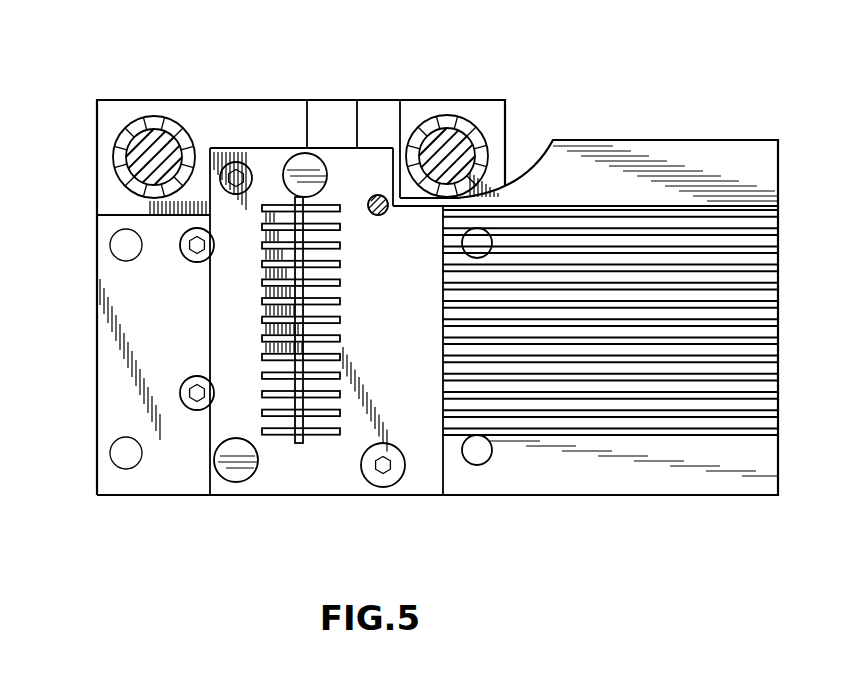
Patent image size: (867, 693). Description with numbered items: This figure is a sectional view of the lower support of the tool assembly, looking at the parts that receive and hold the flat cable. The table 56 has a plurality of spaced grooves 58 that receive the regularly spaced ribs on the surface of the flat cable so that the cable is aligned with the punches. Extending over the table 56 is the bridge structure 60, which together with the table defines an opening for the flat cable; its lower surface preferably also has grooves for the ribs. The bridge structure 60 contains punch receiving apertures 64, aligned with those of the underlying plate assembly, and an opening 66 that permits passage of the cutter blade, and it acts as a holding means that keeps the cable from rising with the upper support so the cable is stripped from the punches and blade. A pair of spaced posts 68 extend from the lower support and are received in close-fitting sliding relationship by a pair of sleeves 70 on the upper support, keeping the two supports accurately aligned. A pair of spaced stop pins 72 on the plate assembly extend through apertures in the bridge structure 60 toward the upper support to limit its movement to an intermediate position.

The table 56 is at (648, 458).
The grooves 58 is at (670, 242).
The bridge structure 60 is at (398, 333).
The punch receiving apertures 64 is at (343, 205).
The opening 66 is at (290, 328).
The posts 68 is at (168, 140).
The sleeves 70 is at (140, 120).
The stop pins 72 is at (300, 158).